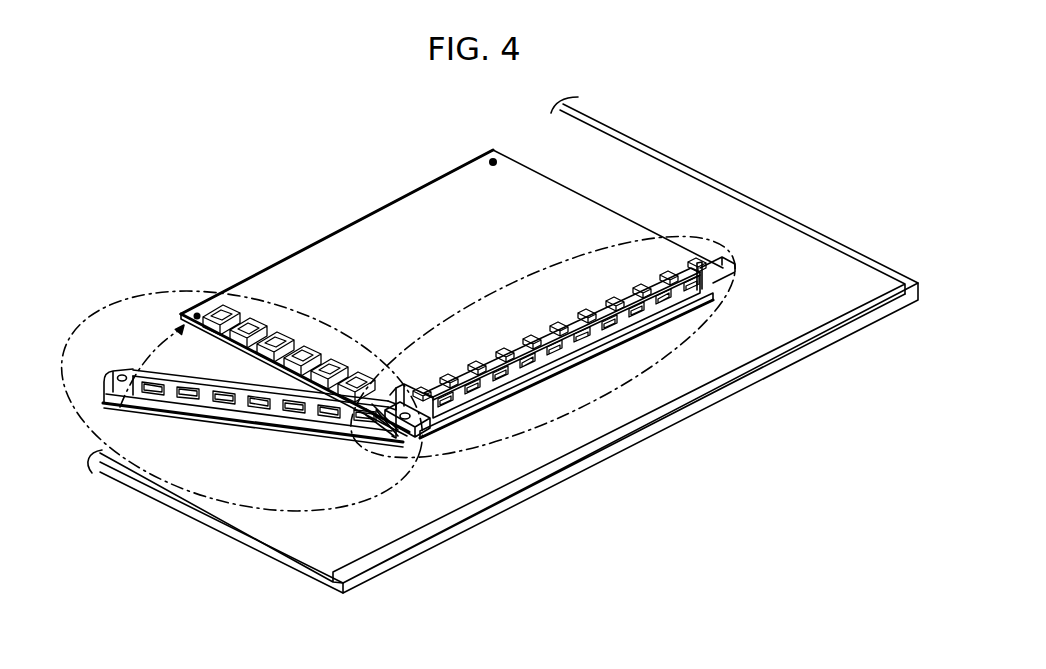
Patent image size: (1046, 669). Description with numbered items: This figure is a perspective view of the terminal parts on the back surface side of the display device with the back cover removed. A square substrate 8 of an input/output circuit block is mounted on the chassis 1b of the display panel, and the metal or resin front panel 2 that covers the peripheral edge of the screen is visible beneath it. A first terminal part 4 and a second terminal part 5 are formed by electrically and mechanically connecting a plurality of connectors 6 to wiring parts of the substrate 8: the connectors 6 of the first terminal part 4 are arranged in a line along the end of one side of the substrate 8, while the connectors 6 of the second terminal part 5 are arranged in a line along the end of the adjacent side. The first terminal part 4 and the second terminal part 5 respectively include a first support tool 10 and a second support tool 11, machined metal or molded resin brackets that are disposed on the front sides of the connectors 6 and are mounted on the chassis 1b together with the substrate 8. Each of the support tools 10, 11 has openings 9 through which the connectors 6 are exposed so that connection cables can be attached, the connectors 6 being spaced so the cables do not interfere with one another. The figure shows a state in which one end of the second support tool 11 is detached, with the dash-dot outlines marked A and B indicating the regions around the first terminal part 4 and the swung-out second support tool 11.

The chassis 1b is at (758, 233).
The front panel 2 is at (658, 147).
The first terminal part 4 is at (680, 320).
The second terminal part 5 is at (197, 347).
The connectors 6 is at (328, 367).
The substrate 8 is at (473, 207).
The openings 9 is at (520, 363).
The first support tool 10 is at (607, 337).
The second support tool 11 is at (215, 408).
The region A is at (588, 403).
The rotation direction B is at (223, 480).